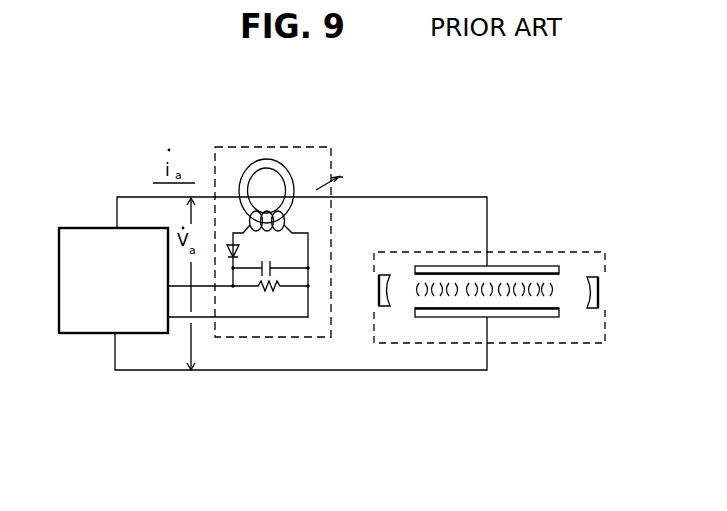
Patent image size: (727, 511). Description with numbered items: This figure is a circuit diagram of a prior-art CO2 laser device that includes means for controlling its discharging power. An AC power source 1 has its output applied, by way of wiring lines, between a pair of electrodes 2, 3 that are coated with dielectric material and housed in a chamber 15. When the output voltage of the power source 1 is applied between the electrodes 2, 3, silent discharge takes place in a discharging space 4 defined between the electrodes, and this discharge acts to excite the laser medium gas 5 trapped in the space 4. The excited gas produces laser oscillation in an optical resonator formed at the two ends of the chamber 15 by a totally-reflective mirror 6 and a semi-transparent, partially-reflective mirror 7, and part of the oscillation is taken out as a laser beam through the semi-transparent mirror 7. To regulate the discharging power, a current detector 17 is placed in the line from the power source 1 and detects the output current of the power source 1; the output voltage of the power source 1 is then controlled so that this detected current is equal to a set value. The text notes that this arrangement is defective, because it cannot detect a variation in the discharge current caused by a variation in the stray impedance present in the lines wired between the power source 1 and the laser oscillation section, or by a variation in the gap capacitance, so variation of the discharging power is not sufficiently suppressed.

The AC power source 1 is at (80, 228).
The electrode 2 is at (508, 266).
The electrode 3 is at (538, 318).
The discharging space 4 is at (534, 282).
The laser medium gas 5 is at (413, 286).
The totally-reflective mirror 6 is at (375, 291).
The semi-transparent mirror 7 is at (600, 290).
The chamber 15 is at (572, 345).
The current detector 17 is at (331, 147).